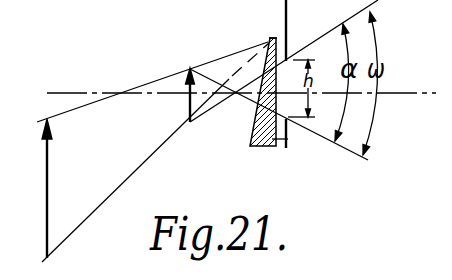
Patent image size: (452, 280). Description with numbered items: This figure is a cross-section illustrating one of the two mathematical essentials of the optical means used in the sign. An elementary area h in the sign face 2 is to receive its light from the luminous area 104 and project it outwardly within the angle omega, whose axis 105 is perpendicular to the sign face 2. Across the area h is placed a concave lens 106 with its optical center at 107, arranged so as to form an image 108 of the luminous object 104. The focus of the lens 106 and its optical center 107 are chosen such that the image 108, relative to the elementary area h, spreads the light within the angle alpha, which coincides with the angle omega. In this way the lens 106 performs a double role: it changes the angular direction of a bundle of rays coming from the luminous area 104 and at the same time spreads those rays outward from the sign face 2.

The sign face 2 is at (290, 25).
The luminous area 104 is at (49, 188).
The axis 105 is at (390, 91).
The concave lens 106 is at (286, 148).
The optical center 107 is at (273, 37).
The image 108 is at (188, 104).